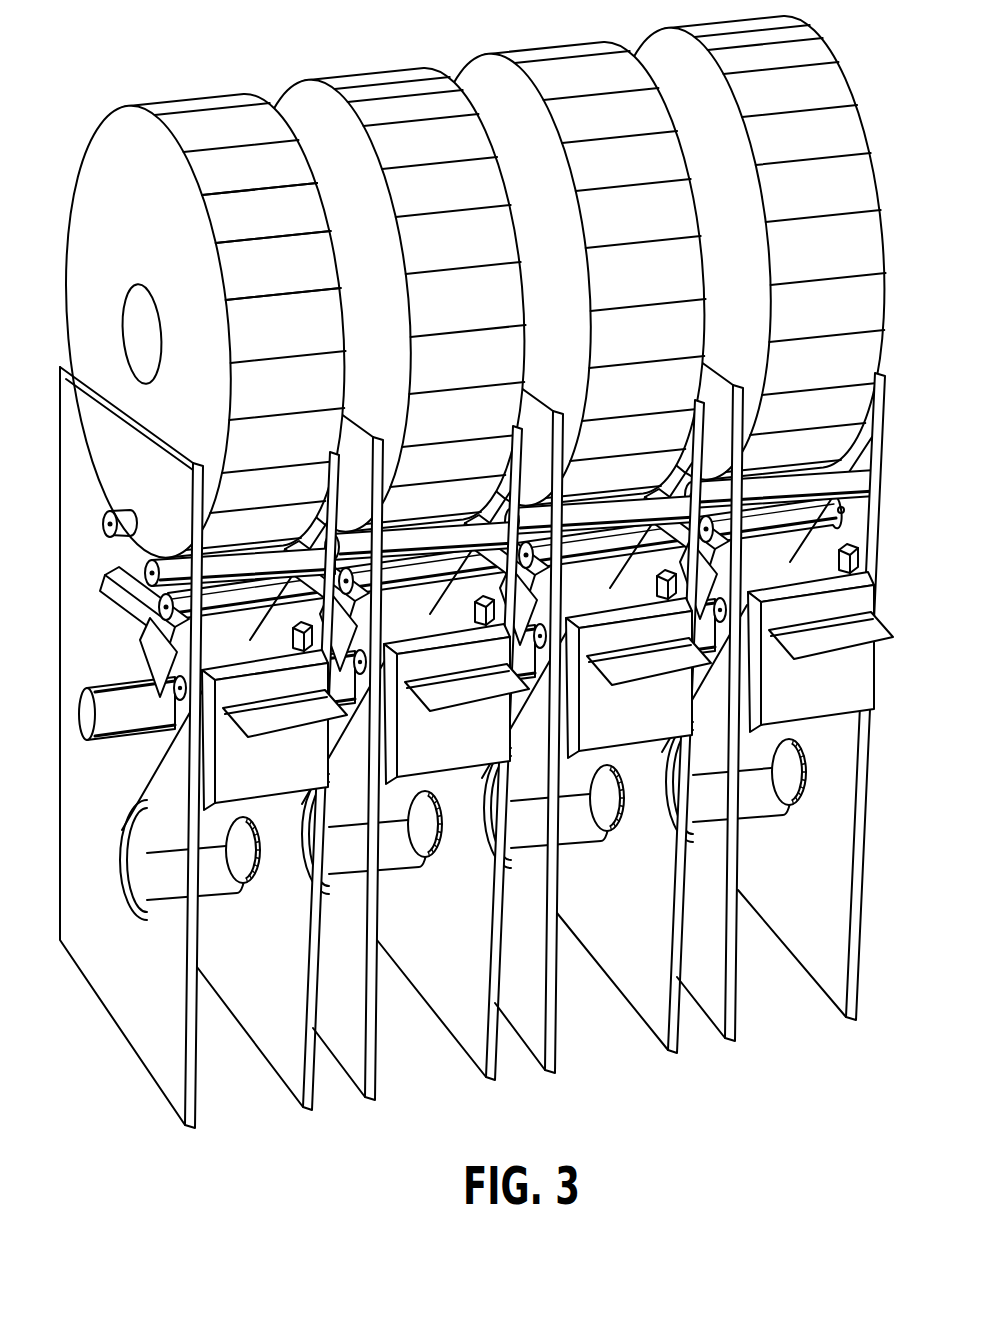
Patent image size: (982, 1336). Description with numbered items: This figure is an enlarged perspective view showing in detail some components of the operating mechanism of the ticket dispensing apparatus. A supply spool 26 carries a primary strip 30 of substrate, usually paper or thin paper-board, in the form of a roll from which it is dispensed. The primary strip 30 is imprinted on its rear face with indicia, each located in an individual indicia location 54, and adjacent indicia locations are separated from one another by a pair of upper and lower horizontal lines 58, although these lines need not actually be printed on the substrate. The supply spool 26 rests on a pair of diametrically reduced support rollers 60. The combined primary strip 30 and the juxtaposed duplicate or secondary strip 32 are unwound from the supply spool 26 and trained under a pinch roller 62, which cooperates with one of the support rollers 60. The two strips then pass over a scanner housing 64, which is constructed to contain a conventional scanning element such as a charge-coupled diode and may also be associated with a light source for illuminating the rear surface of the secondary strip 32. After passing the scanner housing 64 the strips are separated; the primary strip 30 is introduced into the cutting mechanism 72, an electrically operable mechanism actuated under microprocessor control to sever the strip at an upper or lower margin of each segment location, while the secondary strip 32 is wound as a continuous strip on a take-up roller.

The supply spool 26 is at (148, 196).
The indicia location on the primary strip 54 is at (228, 214).
The upper and lower horizontal lines 58 is at (243, 303).
The support rollers 60 is at (144, 561).
The scanner housing 64 is at (110, 605).
The pinch roller 62 is at (142, 640).
The primary strip 30 is at (162, 654).
The cutting mechanism 72 is at (176, 809).
The secondary strip 32 is at (127, 896).